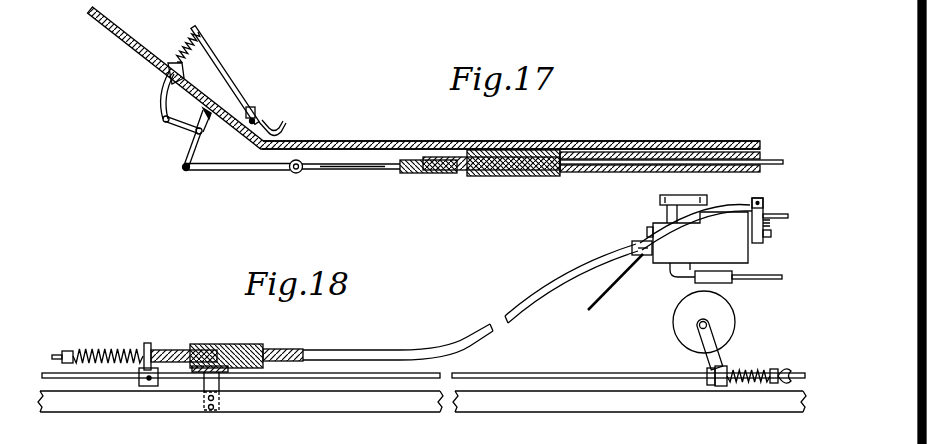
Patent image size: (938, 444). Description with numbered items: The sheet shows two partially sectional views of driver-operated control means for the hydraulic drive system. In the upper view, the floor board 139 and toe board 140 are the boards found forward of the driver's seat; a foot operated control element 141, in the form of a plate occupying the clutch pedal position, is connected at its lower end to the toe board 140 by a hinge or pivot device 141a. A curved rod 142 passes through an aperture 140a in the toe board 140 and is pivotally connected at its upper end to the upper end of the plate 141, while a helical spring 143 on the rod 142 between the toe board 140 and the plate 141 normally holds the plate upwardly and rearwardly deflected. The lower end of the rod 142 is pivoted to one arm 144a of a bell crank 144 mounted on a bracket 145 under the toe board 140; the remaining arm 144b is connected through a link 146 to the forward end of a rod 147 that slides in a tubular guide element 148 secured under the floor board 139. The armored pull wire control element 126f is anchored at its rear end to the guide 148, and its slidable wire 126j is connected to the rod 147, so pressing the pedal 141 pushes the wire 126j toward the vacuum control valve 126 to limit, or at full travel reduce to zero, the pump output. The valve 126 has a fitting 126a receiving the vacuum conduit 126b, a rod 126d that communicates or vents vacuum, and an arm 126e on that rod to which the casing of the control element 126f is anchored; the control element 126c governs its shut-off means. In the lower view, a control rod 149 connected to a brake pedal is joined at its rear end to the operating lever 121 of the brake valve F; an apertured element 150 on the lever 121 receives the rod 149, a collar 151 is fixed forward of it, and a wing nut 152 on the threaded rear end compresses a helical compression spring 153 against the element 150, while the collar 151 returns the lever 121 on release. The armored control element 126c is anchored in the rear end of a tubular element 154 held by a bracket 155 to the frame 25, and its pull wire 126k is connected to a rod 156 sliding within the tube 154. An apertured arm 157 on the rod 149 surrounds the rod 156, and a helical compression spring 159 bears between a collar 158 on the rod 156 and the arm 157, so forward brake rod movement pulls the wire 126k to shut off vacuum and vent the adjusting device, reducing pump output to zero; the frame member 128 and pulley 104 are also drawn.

In FIG. 17, the frame member 128 is at (333, 0).
In FIG. 17, the floor board 139 is at (448, 140).
In FIG. 17, the toe board 140 is at (116, 42).
In FIG. 17, the aperture 140a is at (168, 70).
In FIG. 17, the foot operated control element 141 is at (228, 66).
In FIG. 17, the hinge or pivot device 141a is at (256, 106).
In FIG. 17, the curved rod 142 is at (162, 98).
In FIG. 17, the helical spring 143 is at (177, 57).
In FIG. 17, the bell crank 144 is at (190, 137).
In FIG. 17, the bell crank arm 144a is at (162, 124).
In FIG. 17, the bell crank arm 144b is at (185, 163).
In FIG. 17, the bracket 145 is at (208, 124).
In FIG. 17, the link 146 is at (244, 171).
In FIG. 17, the rod 147 is at (378, 170).
In FIG. 17, the tubular guide element 148 is at (452, 175).
In FIG. 17, the control wire 126j is at (540, 178).
In FIG. 18, the control wire 126j is at (595, 312).
In FIG. 17, the armored pull wire control element 126f is at (650, 173).
In FIG. 18, the armored pull wire control element 126f is at (618, 275).
In FIG. 18, the vacuum control valve 126 is at (662, 232).
In FIG. 18, the fitting 126a is at (692, 280).
In FIG. 18, the conduit 126b is at (790, 288).
In FIG. 18, the control element 126c is at (522, 306).
In FIG. 18, the rod 126d is at (757, 236).
In FIG. 18, the arm 126e is at (770, 188).
In FIG. 18, the pull wire 126k is at (282, 352).
In FIG. 18, the pulley 104 is at (673, 327).
In FIG. 18, the operating lever 121 is at (706, 340).
In FIG. 18, the control rod 149 is at (496, 373).
In FIG. 18, the apertured element 150 is at (724, 369).
In FIG. 18, the collar 151 is at (708, 370).
In FIG. 18, the wing nut 152 is at (779, 368).
In FIG. 18, the helical compression spring 153 is at (762, 368).
In FIG. 18, the tubular element 154 is at (236, 345).
In FIG. 18, the bracket 155 is at (221, 386).
In FIG. 18, the rod 156 is at (181, 349).
In FIG. 18, the apertured arm 157 is at (146, 343).
In FIG. 18, the collar 158 is at (66, 350).
In FIG. 18, the helical compression spring 159 is at (128, 336).
In FIG. 18, the rail 25 is at (650, 397).
In FIG. 18, the brake valve F is at (670, 313).